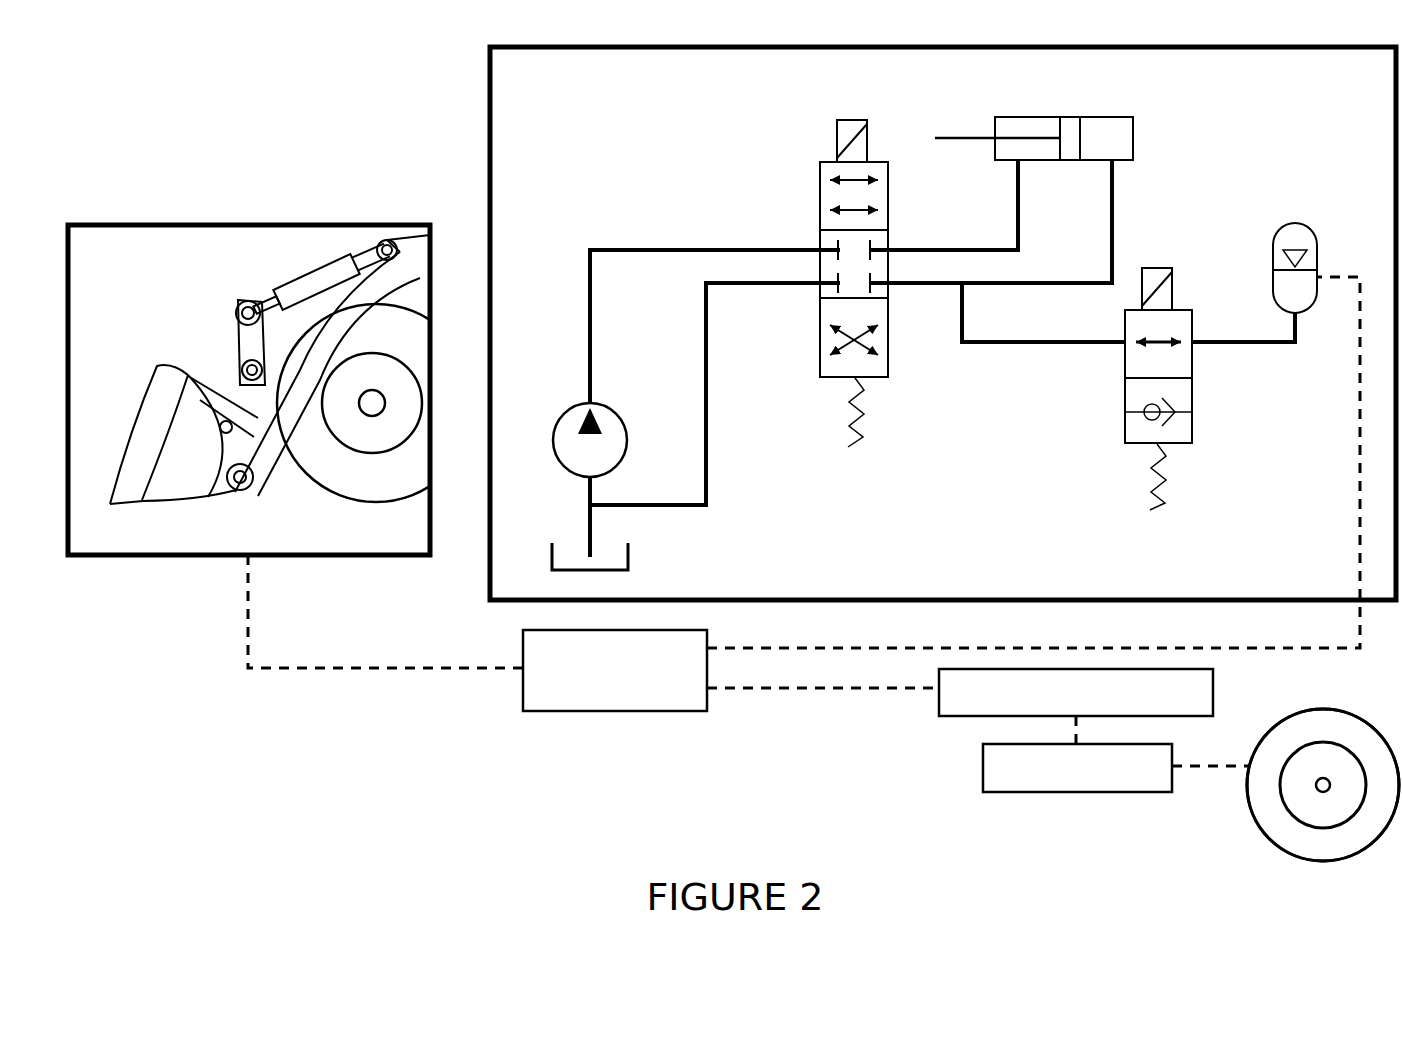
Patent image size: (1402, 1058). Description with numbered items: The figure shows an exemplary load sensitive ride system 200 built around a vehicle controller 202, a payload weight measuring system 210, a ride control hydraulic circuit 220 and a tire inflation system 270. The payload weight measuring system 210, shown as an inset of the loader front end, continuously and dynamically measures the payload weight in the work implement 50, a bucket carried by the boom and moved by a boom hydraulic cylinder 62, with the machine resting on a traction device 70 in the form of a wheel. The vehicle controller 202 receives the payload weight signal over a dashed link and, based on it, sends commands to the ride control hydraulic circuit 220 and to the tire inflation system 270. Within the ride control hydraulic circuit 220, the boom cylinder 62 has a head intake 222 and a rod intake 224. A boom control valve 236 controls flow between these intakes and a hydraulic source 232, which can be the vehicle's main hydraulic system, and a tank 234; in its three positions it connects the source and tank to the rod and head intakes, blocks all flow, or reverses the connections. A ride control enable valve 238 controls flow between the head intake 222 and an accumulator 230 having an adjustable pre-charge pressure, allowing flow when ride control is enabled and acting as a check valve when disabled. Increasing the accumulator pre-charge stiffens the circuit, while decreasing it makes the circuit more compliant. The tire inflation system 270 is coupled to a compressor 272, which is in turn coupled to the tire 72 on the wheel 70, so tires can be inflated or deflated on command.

The load sensitive ride system 200 is at (314, 79).
The payload weight measuring system 210 is at (175, 302).
The work implement 50 is at (148, 420).
The boom hydraulic cylinder 62 is at (296, 284).
The traction device 70 is at (286, 494).
The tire 72 is at (1292, 718).
The ride control hydraulic circuit 220 is at (1268, 120).
The head intake 222 is at (1112, 160).
The rod intake 224 is at (1016, 160).
The accumulator 230 is at (1312, 243).
The hydraulic source 232 is at (615, 418).
The tank 234 is at (560, 524).
The boom control valve 236 is at (788, 179).
The ride control enable valve 238 is at (1087, 383).
The vehicle controller 202 is at (523, 686).
The tire inflation system 270 is at (939, 710).
The compressor 272 is at (983, 775).